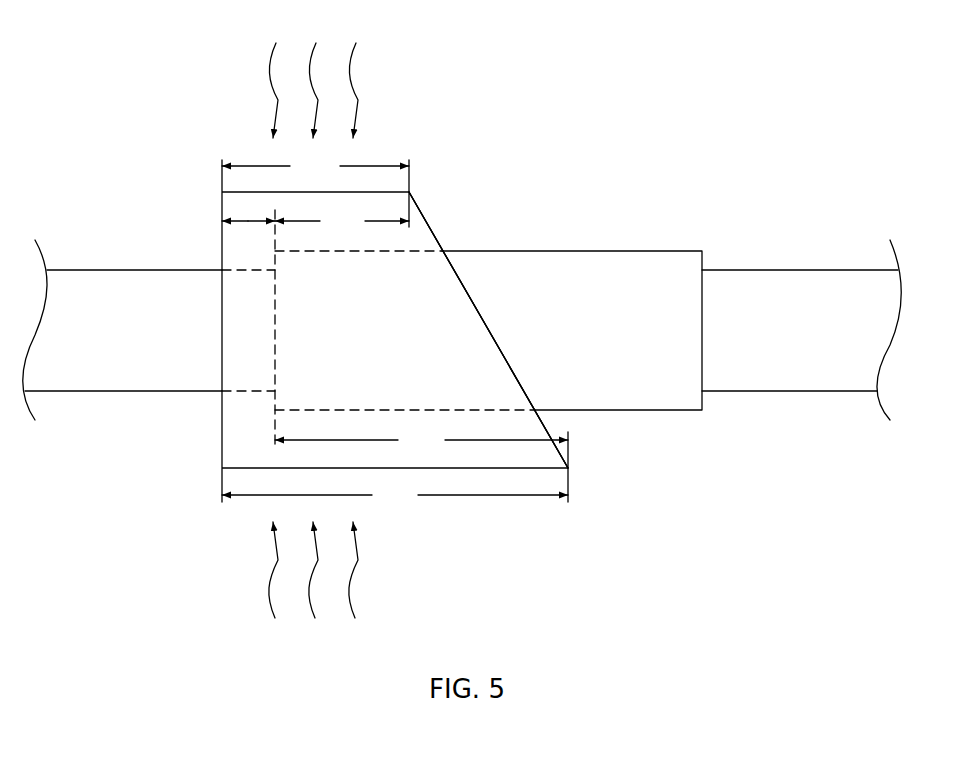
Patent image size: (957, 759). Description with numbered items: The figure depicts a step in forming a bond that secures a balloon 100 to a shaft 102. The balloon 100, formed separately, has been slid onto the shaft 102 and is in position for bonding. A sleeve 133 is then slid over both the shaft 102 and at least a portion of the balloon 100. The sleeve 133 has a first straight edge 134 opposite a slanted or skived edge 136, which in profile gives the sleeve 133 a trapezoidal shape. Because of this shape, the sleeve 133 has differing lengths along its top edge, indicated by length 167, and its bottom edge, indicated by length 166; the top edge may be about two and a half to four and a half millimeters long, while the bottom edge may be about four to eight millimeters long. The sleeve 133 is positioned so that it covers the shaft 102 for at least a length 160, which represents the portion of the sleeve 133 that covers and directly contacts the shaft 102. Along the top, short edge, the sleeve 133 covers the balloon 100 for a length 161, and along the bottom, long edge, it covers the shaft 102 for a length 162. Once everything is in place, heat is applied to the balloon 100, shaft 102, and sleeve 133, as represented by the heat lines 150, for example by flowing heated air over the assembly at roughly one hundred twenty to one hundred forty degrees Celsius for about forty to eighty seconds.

The balloon 100 is at (578, 258).
The shaft 102 is at (105, 378).
The sleeve 133 is at (420, 211).
The first straight edge 134 is at (222, 430).
The slanted or skived edge 136 is at (488, 330).
The heat lines 150 is at (350, 83).
The length 160 is at (222, 221).
The length 161 is at (342, 221).
The length 162 is at (421, 448).
The length 166 is at (395, 495).
The length 167 is at (315, 173).